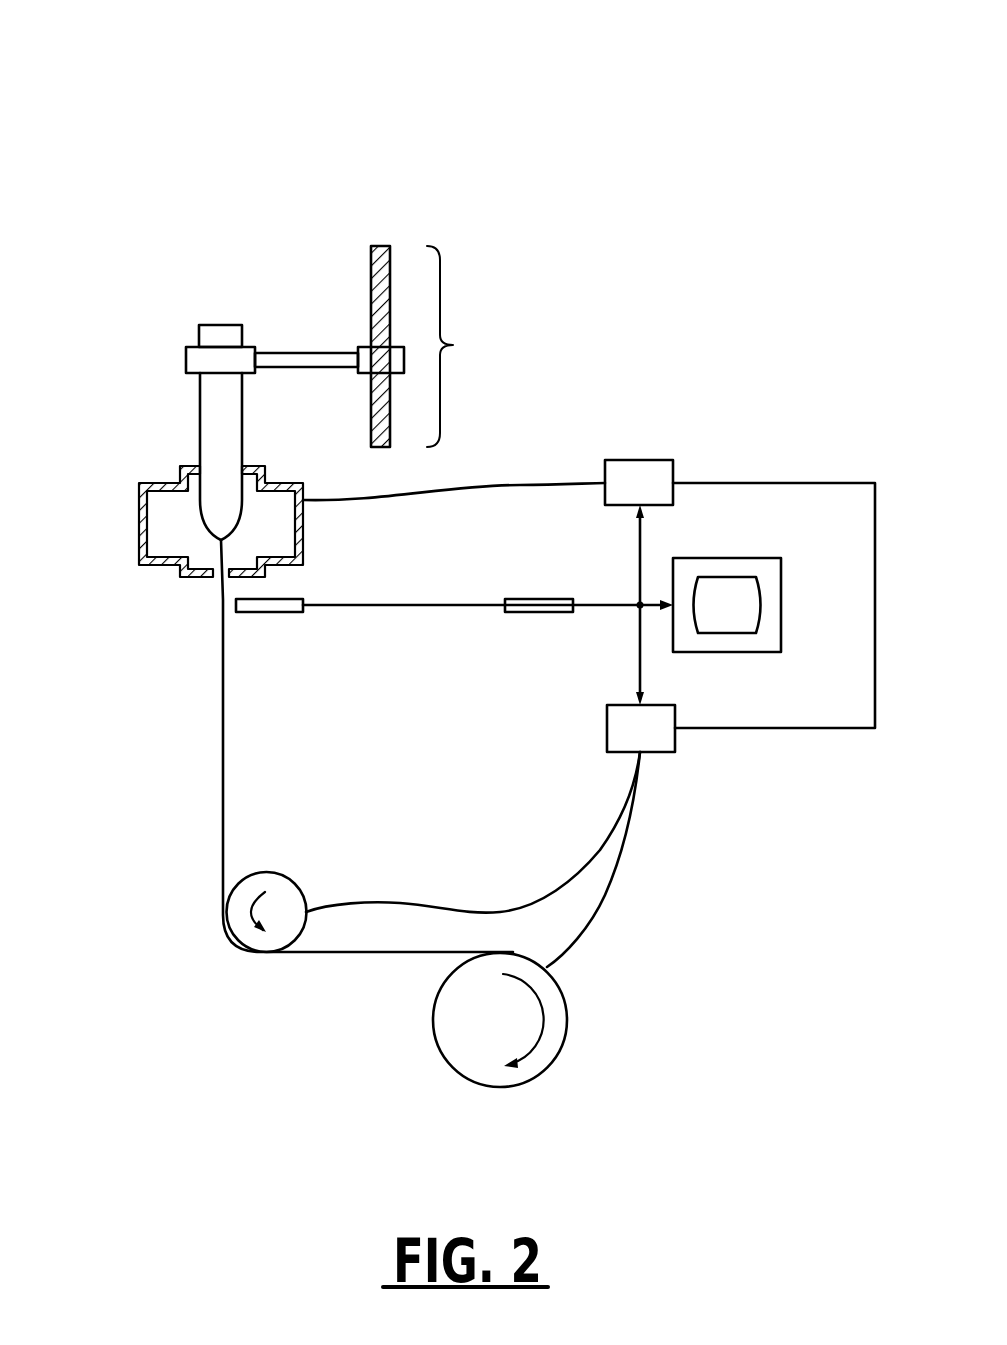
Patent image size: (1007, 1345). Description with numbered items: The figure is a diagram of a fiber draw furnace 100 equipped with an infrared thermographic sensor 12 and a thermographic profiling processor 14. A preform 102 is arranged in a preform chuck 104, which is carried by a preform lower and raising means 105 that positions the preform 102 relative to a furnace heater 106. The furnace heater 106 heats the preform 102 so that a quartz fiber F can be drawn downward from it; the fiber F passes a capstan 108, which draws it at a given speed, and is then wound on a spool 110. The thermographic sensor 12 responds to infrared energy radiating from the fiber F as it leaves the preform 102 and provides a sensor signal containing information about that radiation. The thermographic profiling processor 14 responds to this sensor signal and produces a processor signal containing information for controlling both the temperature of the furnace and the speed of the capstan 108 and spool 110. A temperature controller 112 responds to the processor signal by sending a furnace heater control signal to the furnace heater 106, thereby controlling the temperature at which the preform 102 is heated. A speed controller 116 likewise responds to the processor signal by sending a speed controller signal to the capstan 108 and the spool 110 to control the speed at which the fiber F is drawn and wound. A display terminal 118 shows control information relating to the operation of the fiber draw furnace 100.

The fiber draw furnace 100 is at (154, 92).
The preform 102 is at (200, 440).
The preform chuck 104 is at (195, 347).
The preform lower and raising means 105 is at (463, 345).
The furnace heater 106 is at (157, 570).
The quartz fiber F is at (223, 800).
The capstan 108 is at (306, 885).
The spool 110 is at (568, 1018).
The thermographic sensor 12 is at (293, 607).
The thermographic profiling processor 14 is at (517, 612).
The temperature controller 112 is at (660, 460).
The speed controller 116 is at (675, 748).
The display terminal 118 is at (722, 558).